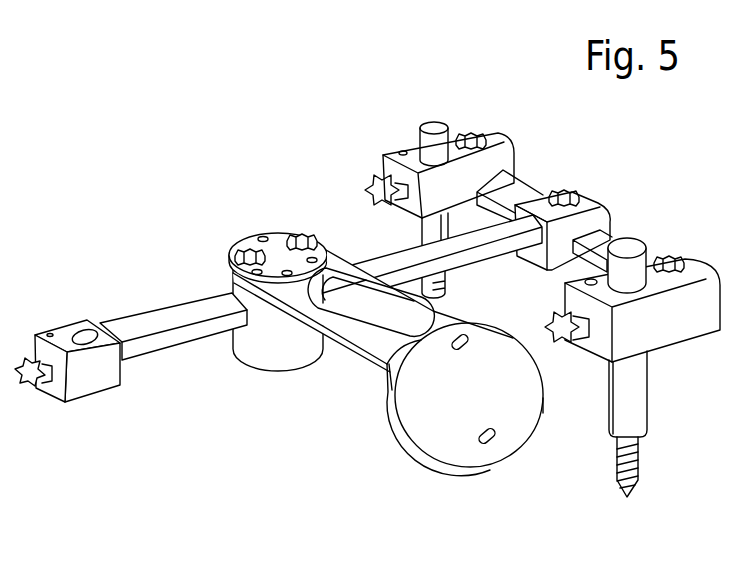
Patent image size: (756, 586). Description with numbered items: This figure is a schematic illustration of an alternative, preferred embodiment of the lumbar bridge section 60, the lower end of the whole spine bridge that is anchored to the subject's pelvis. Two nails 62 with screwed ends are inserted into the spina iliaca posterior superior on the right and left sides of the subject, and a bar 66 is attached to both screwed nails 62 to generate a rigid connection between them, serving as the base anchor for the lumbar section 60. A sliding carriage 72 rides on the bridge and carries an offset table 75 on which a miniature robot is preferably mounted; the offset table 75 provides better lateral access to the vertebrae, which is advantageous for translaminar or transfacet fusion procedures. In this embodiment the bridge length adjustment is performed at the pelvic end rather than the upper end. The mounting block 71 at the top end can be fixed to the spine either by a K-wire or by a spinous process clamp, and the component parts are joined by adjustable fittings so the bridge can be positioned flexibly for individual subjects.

The lumbar bridge section 60 is at (157, 313).
The nails 62 is at (419, 237).
The bar 66 is at (528, 180).
The mounting block 71 is at (52, 330).
The sliding carriage 72 is at (291, 370).
The offset table 75 is at (543, 415).